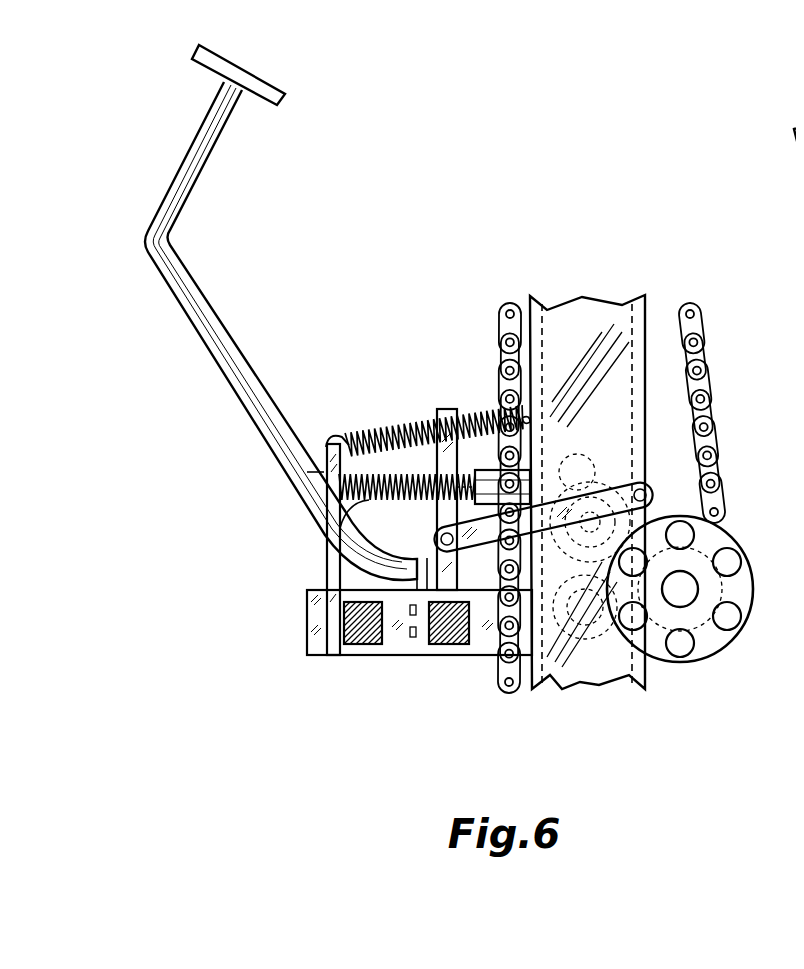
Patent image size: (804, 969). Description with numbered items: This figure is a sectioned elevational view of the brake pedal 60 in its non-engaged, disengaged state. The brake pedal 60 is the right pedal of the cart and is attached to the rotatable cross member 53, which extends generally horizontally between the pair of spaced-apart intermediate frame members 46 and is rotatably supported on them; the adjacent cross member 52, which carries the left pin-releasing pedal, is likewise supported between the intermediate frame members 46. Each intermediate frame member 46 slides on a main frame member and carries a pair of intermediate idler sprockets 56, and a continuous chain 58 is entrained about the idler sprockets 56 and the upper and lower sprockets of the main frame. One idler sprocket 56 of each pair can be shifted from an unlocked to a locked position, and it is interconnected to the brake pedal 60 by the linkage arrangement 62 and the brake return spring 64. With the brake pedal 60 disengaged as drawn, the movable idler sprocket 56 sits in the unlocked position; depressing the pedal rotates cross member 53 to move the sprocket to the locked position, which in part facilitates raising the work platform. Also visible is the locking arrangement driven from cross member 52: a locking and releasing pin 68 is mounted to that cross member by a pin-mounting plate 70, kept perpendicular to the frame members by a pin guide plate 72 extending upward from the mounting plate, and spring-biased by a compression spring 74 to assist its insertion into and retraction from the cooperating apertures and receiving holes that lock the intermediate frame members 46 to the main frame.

The intermediate frame member 46 is at (597, 683).
The cross member 52 is at (365, 653).
The cross member 53 is at (453, 653).
The intermediate idler sprocket 56 is at (708, 653).
The continuous chain 58 is at (500, 307).
The brake pedal 60 is at (228, 330).
The linkage arrangement 62 is at (473, 562).
The brake return spring 64 is at (372, 420).
The locking and releasing pin 68 is at (307, 475).
The pin-mounting plate 70 is at (317, 653).
The pin guide plate 72 is at (325, 571).
The compression spring 74 is at (340, 527).